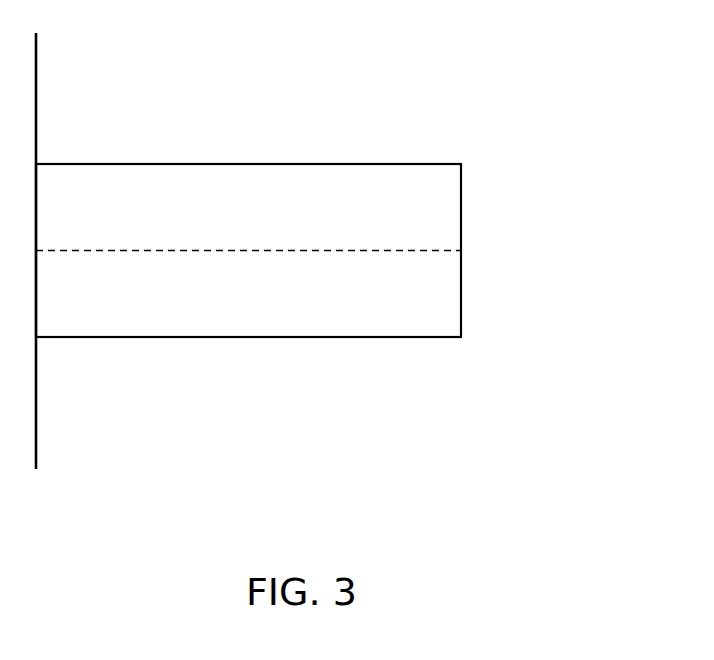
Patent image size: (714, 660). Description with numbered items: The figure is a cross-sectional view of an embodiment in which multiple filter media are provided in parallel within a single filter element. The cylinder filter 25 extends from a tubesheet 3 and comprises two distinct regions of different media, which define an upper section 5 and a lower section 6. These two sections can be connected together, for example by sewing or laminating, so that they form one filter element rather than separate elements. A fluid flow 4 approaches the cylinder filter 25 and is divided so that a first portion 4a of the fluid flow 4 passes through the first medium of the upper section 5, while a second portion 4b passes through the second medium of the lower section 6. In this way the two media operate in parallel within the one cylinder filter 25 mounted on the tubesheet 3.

The tubesheet 3 is at (36, 104).
The cylinder filter 25 is at (215, 163).
The upper section 5 is at (248, 227).
The lower section 6 is at (248, 294).
The fluid flow 4 is at (537, 250).
The first portion of the fluid flow 4a is at (352, 112).
The second portion of the fluid flow 4b is at (352, 391).